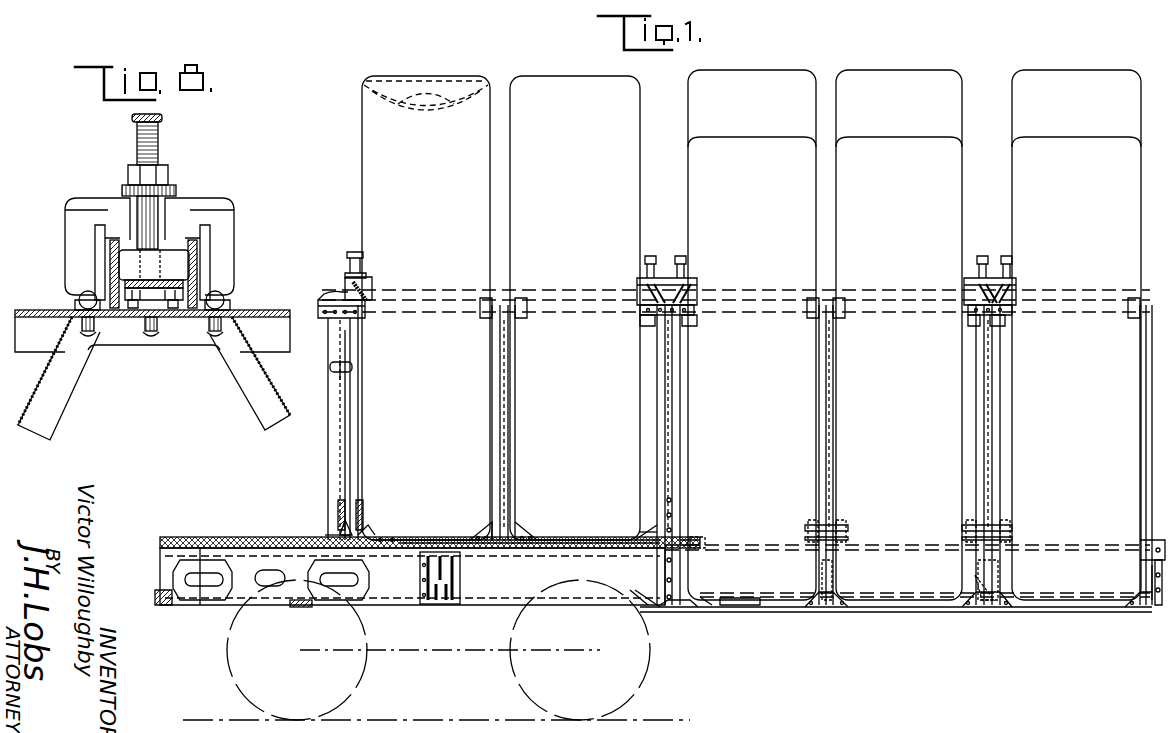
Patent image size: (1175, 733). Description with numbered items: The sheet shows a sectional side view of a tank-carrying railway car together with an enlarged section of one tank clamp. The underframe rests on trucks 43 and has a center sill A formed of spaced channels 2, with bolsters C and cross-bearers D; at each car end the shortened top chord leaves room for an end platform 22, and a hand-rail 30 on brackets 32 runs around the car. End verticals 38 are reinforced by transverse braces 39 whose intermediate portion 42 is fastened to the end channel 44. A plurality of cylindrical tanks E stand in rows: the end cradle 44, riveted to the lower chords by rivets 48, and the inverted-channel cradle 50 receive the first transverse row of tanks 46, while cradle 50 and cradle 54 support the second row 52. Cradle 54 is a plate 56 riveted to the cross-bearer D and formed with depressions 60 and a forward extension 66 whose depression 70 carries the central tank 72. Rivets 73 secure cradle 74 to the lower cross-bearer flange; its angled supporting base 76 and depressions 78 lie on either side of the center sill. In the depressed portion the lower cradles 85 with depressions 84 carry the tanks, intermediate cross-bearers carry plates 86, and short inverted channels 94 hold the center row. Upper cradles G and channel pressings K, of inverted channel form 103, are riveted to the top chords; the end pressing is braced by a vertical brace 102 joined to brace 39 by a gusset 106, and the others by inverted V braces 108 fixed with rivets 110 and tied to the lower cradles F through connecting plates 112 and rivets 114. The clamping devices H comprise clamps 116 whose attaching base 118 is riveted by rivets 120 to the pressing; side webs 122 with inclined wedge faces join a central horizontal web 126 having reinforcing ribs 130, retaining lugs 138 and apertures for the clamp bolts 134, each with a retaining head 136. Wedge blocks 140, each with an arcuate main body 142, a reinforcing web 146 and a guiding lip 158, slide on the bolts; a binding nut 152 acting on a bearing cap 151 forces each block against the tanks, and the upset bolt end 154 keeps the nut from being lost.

In FIG. 1, the channels 2 is at (232, 605).
In FIG. 1, the end platform 22 is at (252, 538).
In FIG. 1, the hand-rail 30 is at (332, 370).
In FIG. 1, the brackets 32 is at (338, 372).
In FIG. 1, the end verticals 38 is at (345, 424).
In FIG. 1, the transverse braces 39 is at (345, 530).
In FIG. 1, the intermediate portion 42 is at (345, 522).
In FIG. 1, the trucks 43 is at (436, 650).
In FIG. 1, the end channel 44 is at (365, 532).
In FIG. 1, the first transverse row of tanks 46 is at (426, 308).
In FIG. 1, the rivets 48 is at (380, 540).
In FIG. 1, the cradle 50 is at (492, 532).
In FIG. 1, the row of tanks 52 is at (575, 308).
In FIG. 1, the cradle 54 is at (648, 530).
In FIG. 1, the plate 56 is at (662, 505).
In FIG. 1, the depressions 60 is at (645, 535).
In FIG. 1, the forward extension 66 is at (684, 540).
In FIG. 1, the depression 70 is at (702, 540).
In FIG. 1, the central tank 72 is at (752, 335).
In FIG. 1, the rivets 73 is at (660, 605).
In FIG. 1, the cradle 74 is at (675, 610).
In FIG. 1, the supporting base 76 is at (740, 598).
In FIG. 1, the depressions 78 is at (708, 598).
In FIG. 1, the depressions 84 is at (815, 608).
In FIG. 1, the lower cradles 85 is at (826, 612).
In FIG. 1, the plates 86 is at (1152, 540).
In FIG. 1, the short inverted channel 94 is at (833, 528).
In FIG. 1, the brace 102 is at (352, 444).
In FIG. 1, the inverted channel 103 is at (318, 318).
In FIG. 1, the gusset 106 is at (340, 505).
In FIG. 1, the inverted V shape braces 108 is at (506, 378).
In FIG. 8, the inverted V shape braces 108 is at (50, 405).
In FIG. 8, the rivets 110 is at (88, 330).
In FIG. 1, the connecting plates 112 is at (838, 592).
In FIG. 1, the rivets 114 is at (984, 588).
In FIG. 1, the clamps 116 is at (350, 288).
In FIG. 8, the attaching base 118 is at (75, 305).
In FIG. 8, the rivets 120 is at (88, 292).
In FIG. 8, the side webs 122 is at (108, 258).
In FIG. 8, the central horizontal web 126 is at (154, 275).
In FIG. 8, the reinforcing ribs 130 is at (200, 248).
In FIG. 8, the clamp bolts 134 is at (156, 139).
In FIG. 8, the retaining head 136 is at (130, 300).
In FIG. 8, the retaining lugs 138 is at (172, 300).
In FIG. 1, the wedge blocks 140 is at (372, 292).
In FIG. 8, the main body portion 142 is at (225, 221).
In FIG. 8, the reinforcing web 146 is at (84, 205).
In FIG. 8, the bearing cap 151 is at (170, 190).
In FIG. 8, the binding nut 152 is at (163, 172).
In FIG. 8, the upset end 154 is at (160, 119).
In FIG. 8, the lip 158 is at (98, 240).
In FIG. 1, the center sill A is at (265, 605).
In FIG. 1, the bolsters C is at (420, 605).
In FIG. 1, the cross-bearers D is at (665, 570).
In FIG. 1, the tanks E is at (698, 168).
In FIG. 1, the lower cradles F is at (640, 528).
In FIG. 1, the upper cradles G is at (490, 318).
In FIG. 1, the clamping devices H is at (372, 280).
In FIG. 1, the channel pressings K is at (322, 310).
In FIG. 8, the channel pressings K is at (35, 350).